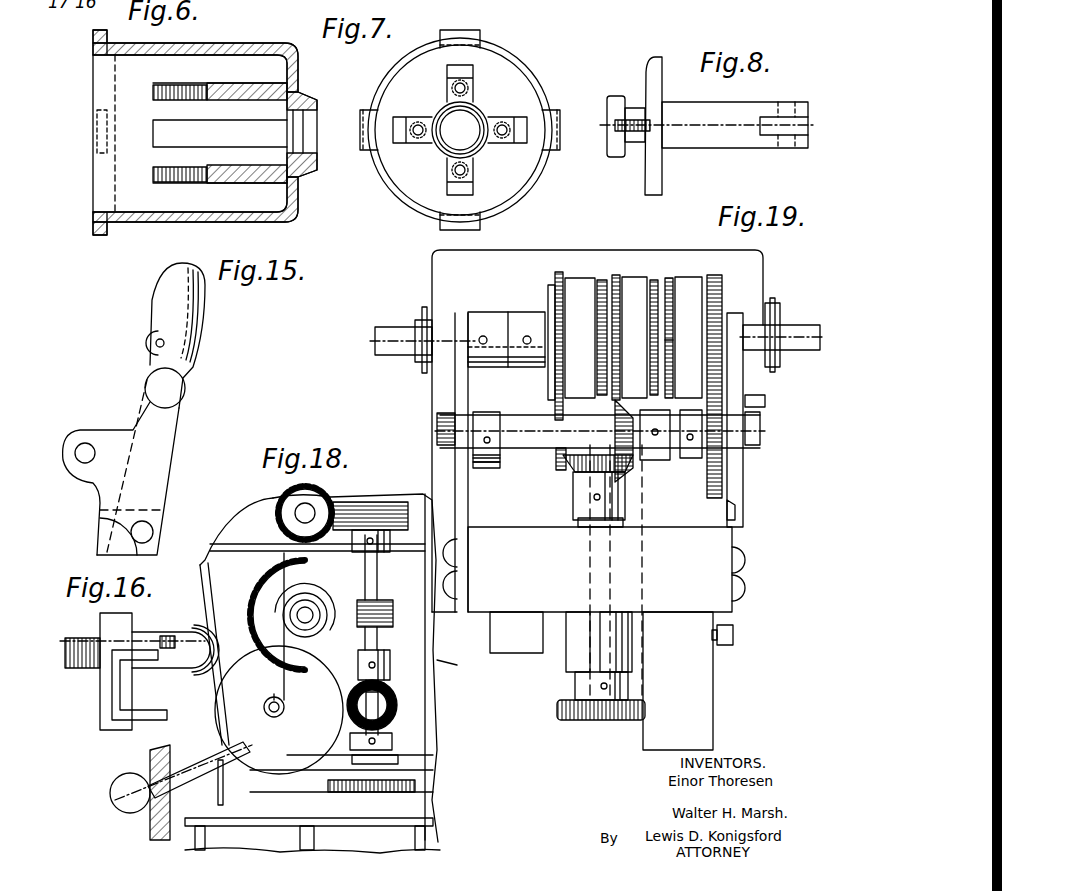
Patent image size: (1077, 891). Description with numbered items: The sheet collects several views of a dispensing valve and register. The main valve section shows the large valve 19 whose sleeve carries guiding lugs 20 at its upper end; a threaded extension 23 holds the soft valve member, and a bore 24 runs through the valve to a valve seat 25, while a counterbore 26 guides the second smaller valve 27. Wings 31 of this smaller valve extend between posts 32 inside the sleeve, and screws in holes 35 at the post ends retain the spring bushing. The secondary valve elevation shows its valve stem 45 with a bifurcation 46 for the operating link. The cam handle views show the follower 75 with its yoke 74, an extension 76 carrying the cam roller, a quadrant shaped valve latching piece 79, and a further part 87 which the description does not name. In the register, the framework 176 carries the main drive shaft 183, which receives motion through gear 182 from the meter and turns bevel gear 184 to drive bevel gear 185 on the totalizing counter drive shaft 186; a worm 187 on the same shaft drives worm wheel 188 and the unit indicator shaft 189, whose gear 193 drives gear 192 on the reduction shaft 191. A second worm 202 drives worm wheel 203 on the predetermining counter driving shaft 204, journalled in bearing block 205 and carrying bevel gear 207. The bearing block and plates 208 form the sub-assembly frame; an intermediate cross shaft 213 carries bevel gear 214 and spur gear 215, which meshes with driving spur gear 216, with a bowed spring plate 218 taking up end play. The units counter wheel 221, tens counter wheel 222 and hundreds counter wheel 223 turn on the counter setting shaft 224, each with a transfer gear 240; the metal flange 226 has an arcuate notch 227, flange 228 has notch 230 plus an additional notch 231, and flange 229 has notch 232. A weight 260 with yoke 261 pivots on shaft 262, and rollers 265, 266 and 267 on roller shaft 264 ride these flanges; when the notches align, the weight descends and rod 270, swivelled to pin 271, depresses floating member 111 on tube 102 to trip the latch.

In FIG. 6, the large valve 19 is at (200, 222).
In FIG. 7, the large valve 19 is at (540, 196).
In FIG. 6, the guiding lugs 20 is at (93, 40).
In FIG. 7, the guiding lugs 20 is at (475, 33).
In FIG. 6, the extension 23 is at (305, 97).
In FIG. 6, the bore 24 is at (305, 145).
In FIG. 7, the bore 24 is at (460, 130).
In FIG. 6, the valve seat 25 is at (285, 118).
In FIG. 6, the counterbore 26 is at (262, 100).
In FIG. 7, the counterbore 26 is at (460, 130).
In FIG. 8, the second smaller valve 27 is at (616, 96).
In FIG. 8, the wings 31 is at (652, 60).
In FIG. 6, the posts 32 is at (200, 88).
In FIG. 7, the posts 32 is at (470, 90).
In FIG. 6, the holes 35 is at (153, 90).
In FIG. 7, the holes 35 is at (448, 89).
In FIG. 8, the valve stem 45 is at (735, 128).
In FIG. 8, the bifurcation 46 is at (770, 140).
In FIG. 16, the yoke 74 is at (100, 706).
In FIG. 15, the follower 75 is at (200, 315).
In FIG. 16, the follower 75 is at (185, 672).
In FIG. 15, the extension 76 is at (110, 432).
In FIG. 16, the extension 76 is at (82, 638).
In FIG. 15, the valve latching piece 79 is at (120, 525).
In FIG. 16, the valve latching piece 79 is at (120, 628).
In FIG. 18, the valve latching piece 79 is at (181, 777).
In FIG. 15, the roller 87 is at (180, 385).
In FIG. 16, the roller 87 is at (150, 665).
In FIG. 18, the tube 102 is at (283, 830).
In FIG. 18, the floating member 111 is at (400, 815).
In FIG. 18, the framework 176 is at (410, 670).
In FIG. 18, the gear 182 is at (330, 790).
In FIG. 18, the main drive shaft 183 is at (400, 695).
In FIG. 18, the bevel gear 184 is at (380, 650).
In FIG. 18, the bevel gear 185 is at (397, 705).
In FIG. 18, the totalizing counter drive shaft 186 is at (395, 745).
In FIG. 18, the worm 187 is at (378, 570).
In FIG. 18, the worm wheel 188 is at (265, 575).
In FIG. 18, the unit indicator shaft 189 is at (300, 612).
In FIG. 18, the reduction shaft 191 is at (272, 697).
In FIG. 16, the gear 192 is at (195, 730).
In FIG. 18, the gear 192 is at (275, 660).
In FIG. 18, the gear 193 is at (330, 585).
In FIG. 18, the second worm 202 is at (408, 482).
In FIG. 18, the worm wheel 203 is at (280, 512).
In FIG. 19, the worm wheel 203 is at (562, 720).
In FIG. 18, the predetermining counter driving shaft 204 is at (305, 503).
In FIG. 19, the predetermining counter driving shaft 204 is at (590, 640).
In FIG. 19, the bearing block 205 is at (635, 650).
In FIG. 19, the bevel gear 207 is at (575, 495).
In FIG. 18, the plates 208 is at (317, 668).
In FIG. 19, the plates 208 is at (455, 388).
In FIG. 19, the intermediate cross shaft 213 is at (545, 460).
In FIG. 19, the bevel gear 214 is at (635, 465).
In FIG. 19, the spur gear 215 is at (700, 450).
In FIG. 19, the driving spur gear 216 is at (745, 370).
In FIG. 19, the bowed spring plate 218 is at (772, 303).
In FIG. 19, the units counter wheel 221 is at (690, 278).
In FIG. 19, the tens counter wheel 222 is at (630, 278).
In FIG. 19, the hundreds counter wheel 223 is at (580, 278).
In FIG. 19, the counter setting shaft 224 is at (400, 330).
In FIG. 19, the metal flange 226 is at (556, 280).
In FIG. 19, the arcuate notch 227 is at (550, 330).
In FIG. 19, the flange 228 is at (616, 275).
In FIG. 19, the flange 229 is at (668, 280).
In FIG. 19, the notch 230 is at (560, 337).
In FIG. 19, the additional notch 231 is at (670, 300).
In FIG. 19, the notch 232 is at (718, 310).
In FIG. 19, the transfer gear 240 is at (718, 262).
In FIG. 19, the weight 260 is at (695, 718).
In FIG. 19, the yoke 261 is at (473, 465).
In FIG. 19, the shaft 262 is at (762, 430).
In FIG. 19, the roller shaft 264 is at (545, 420).
In FIG. 19, the roller 265 is at (765, 402).
In FIG. 19, the roller 266 is at (575, 465).
In FIG. 19, the roller 267 is at (590, 395).
In FIG. 16, the rod 270 is at (210, 603).
In FIG. 19, the rod 270 is at (740, 620).
In FIG. 19, the pin 271 is at (740, 632).